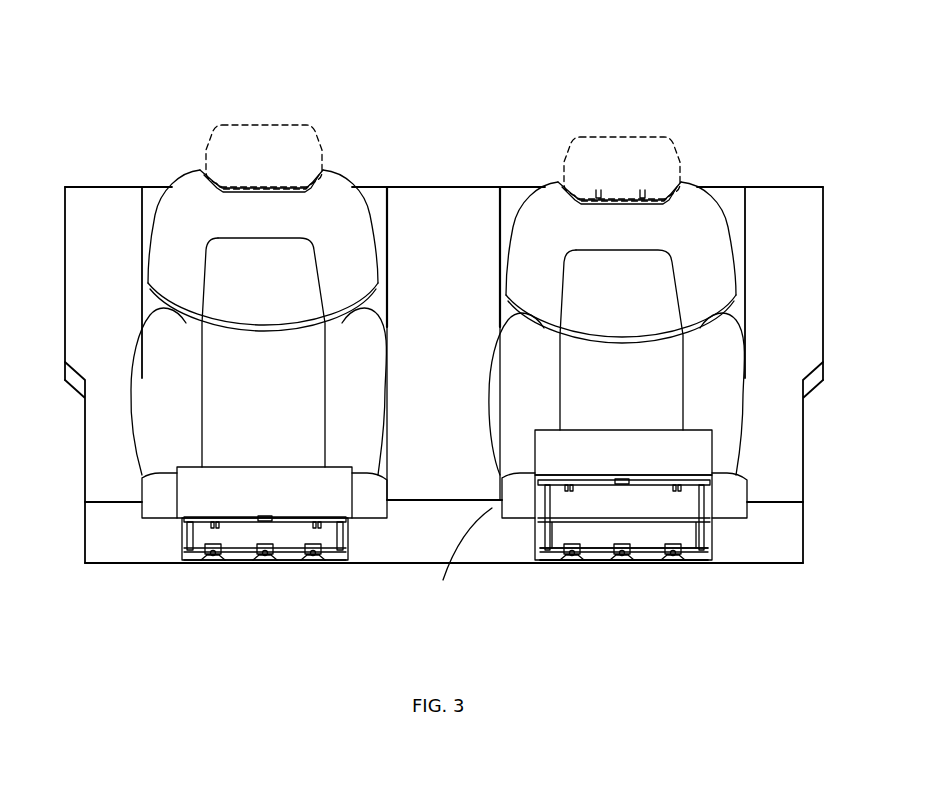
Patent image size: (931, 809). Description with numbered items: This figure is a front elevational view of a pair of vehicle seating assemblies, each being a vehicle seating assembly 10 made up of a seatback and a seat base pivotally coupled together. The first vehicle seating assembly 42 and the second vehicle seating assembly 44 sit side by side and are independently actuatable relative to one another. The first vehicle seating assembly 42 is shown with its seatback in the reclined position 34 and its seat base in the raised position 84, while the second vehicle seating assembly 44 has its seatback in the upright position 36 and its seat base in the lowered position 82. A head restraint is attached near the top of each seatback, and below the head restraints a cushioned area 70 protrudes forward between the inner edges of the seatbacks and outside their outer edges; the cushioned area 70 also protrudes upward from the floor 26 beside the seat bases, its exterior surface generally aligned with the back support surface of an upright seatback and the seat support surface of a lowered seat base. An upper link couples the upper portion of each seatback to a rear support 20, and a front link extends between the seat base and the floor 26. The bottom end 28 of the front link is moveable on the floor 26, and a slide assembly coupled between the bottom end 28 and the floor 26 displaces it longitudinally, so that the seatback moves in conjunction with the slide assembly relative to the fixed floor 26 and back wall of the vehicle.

The vehicle seating assembly 10 is at (166, 52).
The rear support 20 is at (748, 222).
The floor 26 is at (413, 564).
The bottom end 28 is at (706, 546).
The reclined position 34 is at (741, 376).
The upright position 36 is at (146, 376).
The first vehicle seating assembly 42 is at (702, 111).
The second vehicle seating assembly 44 is at (340, 111).
The cushioned area 70 is at (442, 205).
The lowered position 82 is at (194, 497).
The raised position 84 is at (701, 457).